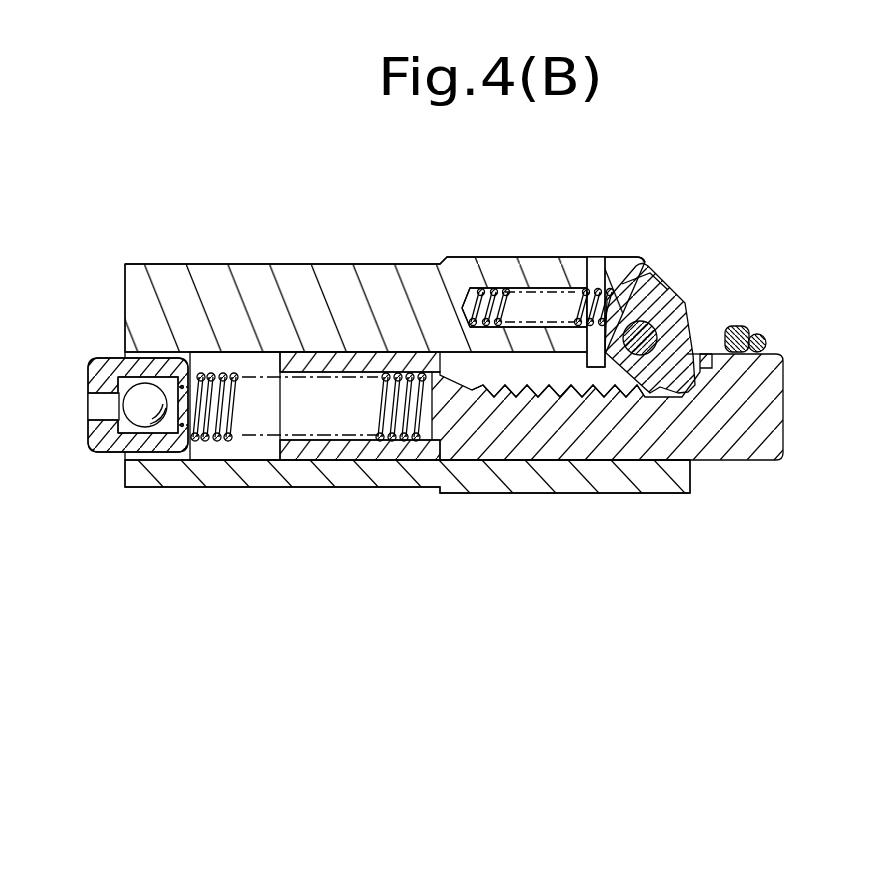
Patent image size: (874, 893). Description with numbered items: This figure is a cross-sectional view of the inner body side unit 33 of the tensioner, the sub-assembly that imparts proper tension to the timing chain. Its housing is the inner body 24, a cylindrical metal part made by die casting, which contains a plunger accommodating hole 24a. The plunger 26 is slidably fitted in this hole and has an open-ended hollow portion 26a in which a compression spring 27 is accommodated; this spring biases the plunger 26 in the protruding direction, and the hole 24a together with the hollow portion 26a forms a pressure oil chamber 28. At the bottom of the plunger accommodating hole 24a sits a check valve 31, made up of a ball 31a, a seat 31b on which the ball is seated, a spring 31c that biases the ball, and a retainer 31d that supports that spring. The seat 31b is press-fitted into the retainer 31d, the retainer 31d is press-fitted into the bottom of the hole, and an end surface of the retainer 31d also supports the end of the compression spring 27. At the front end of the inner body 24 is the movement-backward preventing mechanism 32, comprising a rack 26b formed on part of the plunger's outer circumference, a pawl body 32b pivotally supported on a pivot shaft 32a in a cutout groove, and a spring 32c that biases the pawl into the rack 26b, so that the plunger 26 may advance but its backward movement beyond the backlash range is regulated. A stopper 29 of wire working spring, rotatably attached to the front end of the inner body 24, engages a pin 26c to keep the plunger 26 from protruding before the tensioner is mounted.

The inner body 24 is at (221, 263).
The plunger accommodating hole 24a is at (257, 453).
The plunger 26 is at (783, 403).
The hollow portion 26a is at (355, 440).
The rack 26b is at (540, 392).
The pin 26c is at (740, 323).
The compression spring 27 is at (240, 420).
The pressure oil chamber 28 is at (340, 411).
The stopper 29 is at (768, 342).
The check valve 31 is at (98, 462).
The ball 31a is at (128, 403).
The seat 31b is at (100, 426).
The spring 31c is at (164, 425).
The retainer 31d is at (98, 360).
The movement-backward preventing mechanism 32 is at (686, 286).
The pivot shaft 32a is at (645, 320).
The pawl body 32b is at (627, 285).
The spring 32c is at (520, 290).
The inner body side unit 33 is at (345, 256).